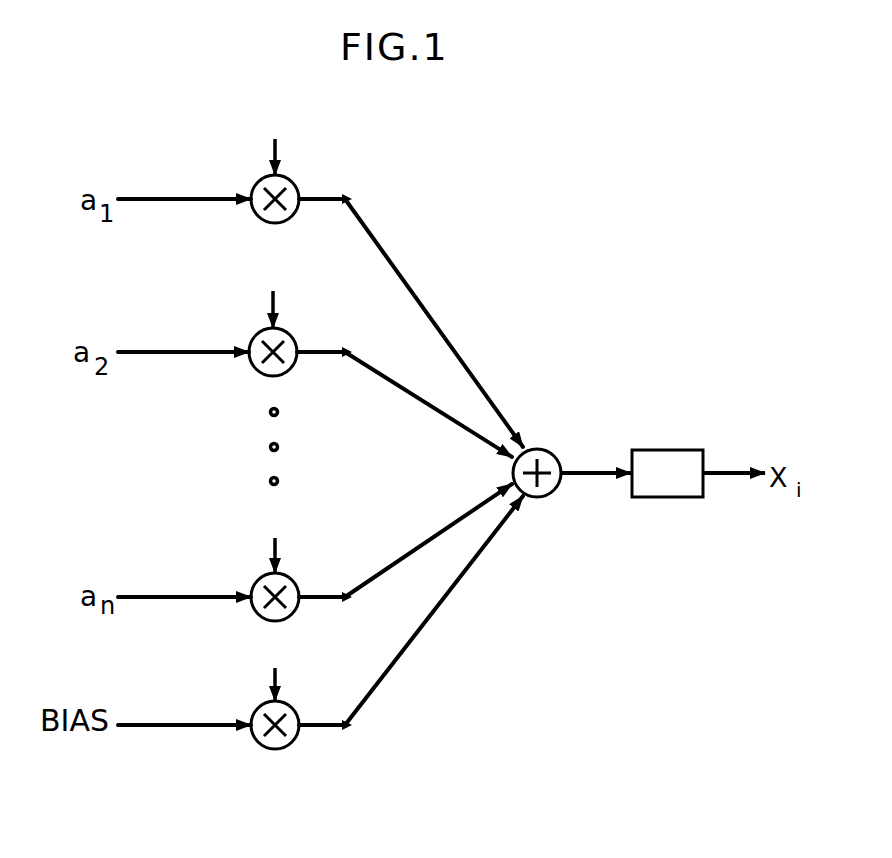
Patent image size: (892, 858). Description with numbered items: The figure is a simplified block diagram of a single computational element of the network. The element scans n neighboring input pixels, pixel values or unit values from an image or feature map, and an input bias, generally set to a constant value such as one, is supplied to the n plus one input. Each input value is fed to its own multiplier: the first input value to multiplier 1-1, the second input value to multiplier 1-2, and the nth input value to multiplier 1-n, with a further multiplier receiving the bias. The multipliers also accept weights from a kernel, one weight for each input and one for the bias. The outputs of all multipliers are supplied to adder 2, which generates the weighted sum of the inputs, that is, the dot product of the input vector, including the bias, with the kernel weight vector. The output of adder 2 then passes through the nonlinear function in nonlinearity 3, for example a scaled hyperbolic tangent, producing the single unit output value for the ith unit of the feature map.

The multiplier 1-1 is at (297, 187).
The multiplier 1-2 is at (295, 340).
The multiplier 1-n is at (296, 585).
The adder 2 is at (534, 449).
The nonlinearity 3 is at (668, 449).